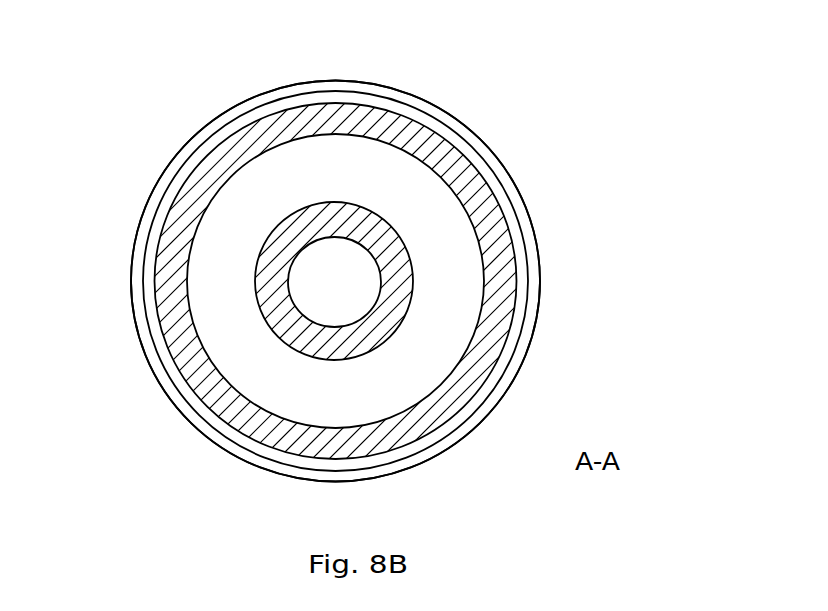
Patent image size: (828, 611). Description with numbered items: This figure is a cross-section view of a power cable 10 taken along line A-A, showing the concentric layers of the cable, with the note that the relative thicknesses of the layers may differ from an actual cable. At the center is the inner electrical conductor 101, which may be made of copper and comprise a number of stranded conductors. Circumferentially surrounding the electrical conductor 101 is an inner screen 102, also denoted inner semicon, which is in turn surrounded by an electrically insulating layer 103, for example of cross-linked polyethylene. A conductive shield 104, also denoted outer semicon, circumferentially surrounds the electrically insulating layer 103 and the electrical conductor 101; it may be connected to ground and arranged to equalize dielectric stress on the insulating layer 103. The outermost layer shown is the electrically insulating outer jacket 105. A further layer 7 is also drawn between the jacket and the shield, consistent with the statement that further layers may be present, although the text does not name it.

The power cable 10 is at (447, 88).
The electrically insulating outer jacket 105 is at (194, 143).
The sheath layer 7 is at (320, 96).
The conductive shield 104 is at (482, 181).
The electrically insulating layer 103 is at (452, 261).
The inner screen 102 is at (397, 315).
The inner electrical conductor 101 is at (342, 297).